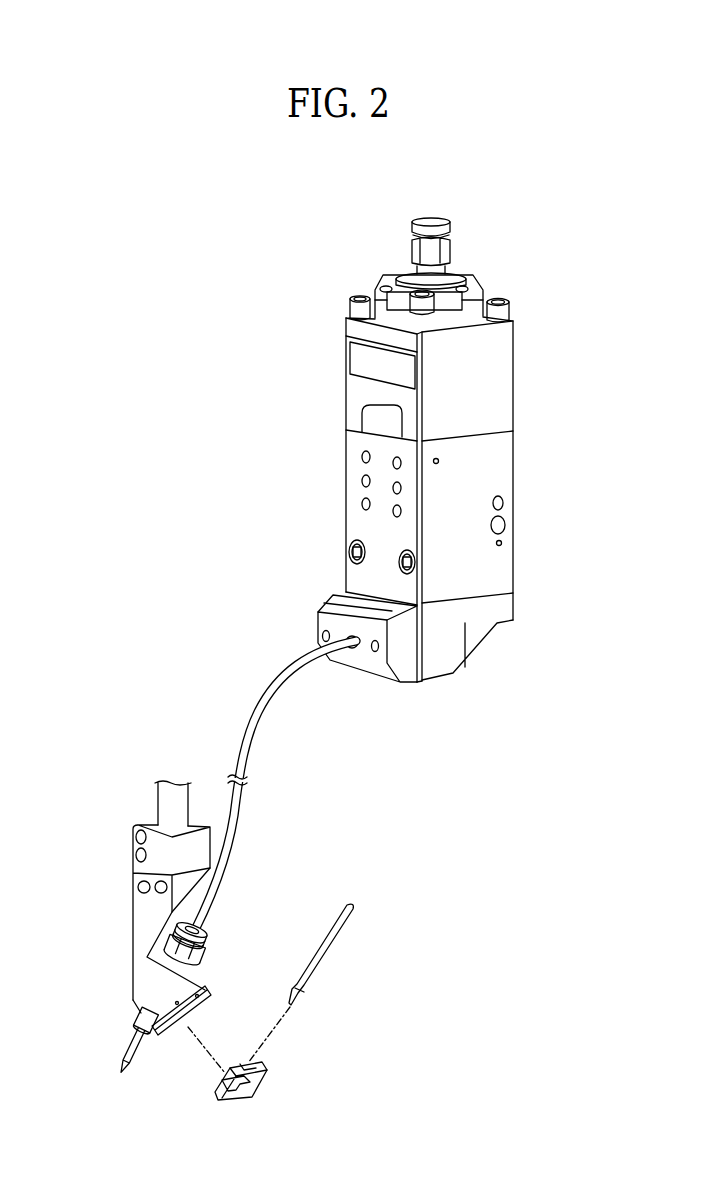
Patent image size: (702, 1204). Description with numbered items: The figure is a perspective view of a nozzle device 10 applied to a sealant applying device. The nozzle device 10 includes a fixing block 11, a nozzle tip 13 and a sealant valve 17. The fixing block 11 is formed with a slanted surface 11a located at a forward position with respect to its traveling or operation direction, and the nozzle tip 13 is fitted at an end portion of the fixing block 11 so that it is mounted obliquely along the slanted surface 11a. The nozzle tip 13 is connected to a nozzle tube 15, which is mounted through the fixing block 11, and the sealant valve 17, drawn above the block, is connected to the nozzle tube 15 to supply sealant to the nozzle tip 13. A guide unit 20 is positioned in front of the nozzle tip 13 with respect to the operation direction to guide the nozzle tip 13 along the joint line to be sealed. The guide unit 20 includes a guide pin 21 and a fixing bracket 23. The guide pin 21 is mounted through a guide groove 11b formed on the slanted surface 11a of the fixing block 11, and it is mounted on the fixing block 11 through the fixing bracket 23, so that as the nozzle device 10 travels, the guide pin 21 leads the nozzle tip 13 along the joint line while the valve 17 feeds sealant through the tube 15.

The nozzle device 10 is at (155, 928).
The fixing block 11 is at (137, 922).
The slanted surface 11a is at (202, 1010).
The guide groove 11b is at (198, 982).
The nozzle tip 13 is at (133, 1042).
The nozzle tube 15 is at (233, 811).
The sealant valve 17 is at (502, 566).
The guide unit 20 is at (313, 1002).
The guide pin 21 is at (340, 947).
The fixing bracket 23 is at (250, 1063).